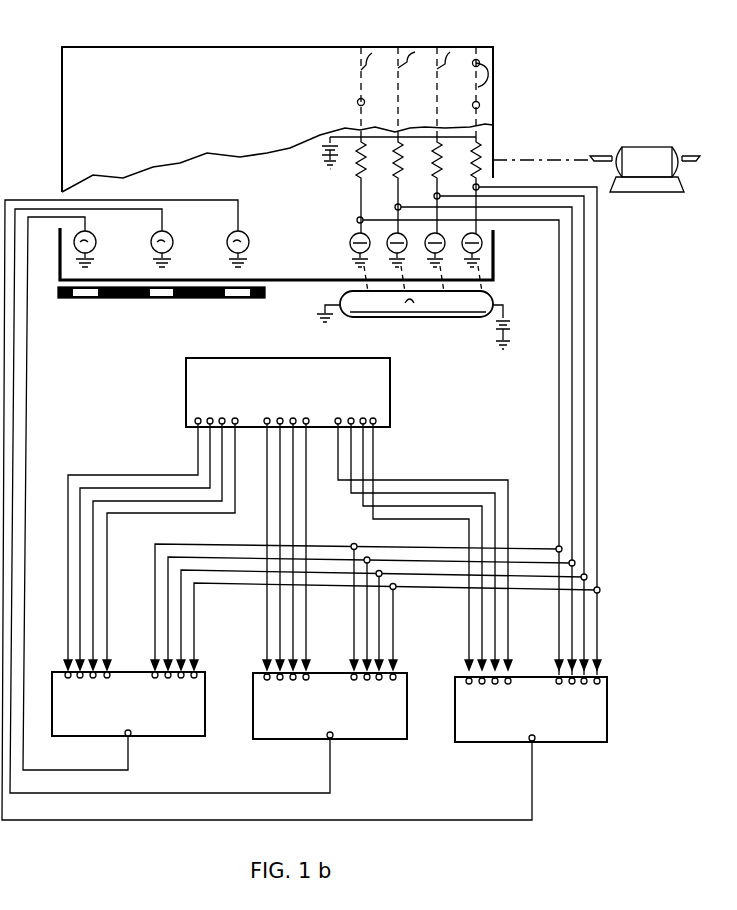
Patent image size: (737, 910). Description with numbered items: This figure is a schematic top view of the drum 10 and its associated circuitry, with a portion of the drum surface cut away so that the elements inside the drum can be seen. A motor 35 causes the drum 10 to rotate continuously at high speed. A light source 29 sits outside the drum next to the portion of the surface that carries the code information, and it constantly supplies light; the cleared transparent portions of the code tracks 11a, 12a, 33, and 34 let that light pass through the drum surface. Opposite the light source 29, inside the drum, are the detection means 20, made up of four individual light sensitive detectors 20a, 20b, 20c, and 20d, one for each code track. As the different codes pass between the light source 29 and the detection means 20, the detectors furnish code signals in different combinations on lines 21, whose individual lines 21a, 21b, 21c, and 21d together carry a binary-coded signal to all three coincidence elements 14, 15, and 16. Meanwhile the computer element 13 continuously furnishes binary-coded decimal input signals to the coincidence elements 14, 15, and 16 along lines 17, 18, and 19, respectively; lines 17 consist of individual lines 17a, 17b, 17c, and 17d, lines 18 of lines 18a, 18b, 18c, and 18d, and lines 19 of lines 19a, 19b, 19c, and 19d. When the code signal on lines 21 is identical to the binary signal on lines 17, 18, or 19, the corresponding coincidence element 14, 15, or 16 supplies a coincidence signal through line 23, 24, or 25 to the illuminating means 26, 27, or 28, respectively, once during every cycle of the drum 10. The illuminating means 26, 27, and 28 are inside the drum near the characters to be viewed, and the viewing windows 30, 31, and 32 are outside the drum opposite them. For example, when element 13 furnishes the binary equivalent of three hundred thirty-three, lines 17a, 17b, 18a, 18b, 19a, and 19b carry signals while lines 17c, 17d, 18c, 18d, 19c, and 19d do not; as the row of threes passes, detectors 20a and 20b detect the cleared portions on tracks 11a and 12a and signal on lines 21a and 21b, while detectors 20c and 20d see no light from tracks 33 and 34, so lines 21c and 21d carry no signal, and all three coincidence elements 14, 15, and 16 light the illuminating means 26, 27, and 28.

The drum 10 is at (320, 47).
The code track 11a is at (374, 50).
The code track 12a is at (418, 52).
The code track 33 is at (452, 52).
The code track 34 is at (485, 50).
The motor 35 is at (636, 147).
The detection means 20 is at (425, 183).
The light sensitive detector 20a is at (350, 239).
The light sensitive detector 20b is at (390, 232).
The light sensitive detector 20c is at (442, 236).
The light sensitive detector 20d is at (482, 248).
The illuminating means 26 is at (96, 244).
The illuminating means 27 is at (173, 244).
The illuminating means 28 is at (249, 244).
The light source 29 is at (490, 297).
The viewing window 30 is at (86, 298).
The viewing window 31 is at (162, 298).
The viewing window 32 is at (237, 298).
The element 13 is at (310, 358).
The line 23 is at (4, 390).
The line 24 is at (11, 420).
The line 25 is at (24, 454).
The lines 17 is at (136, 547).
The line 17a is at (66, 571).
The line 17b is at (78, 598).
The line 17c is at (92, 624).
The line 17d is at (106, 649).
The lines 18 is at (272, 547).
The line 18a is at (266, 605).
The line 18b is at (279, 624).
The line 18c is at (292, 641).
The line 18d is at (306, 658).
The lines 19 is at (425, 547).
The line 19a is at (468, 606).
The line 19b is at (480, 625).
The line 19c is at (493, 644).
The line 19d is at (503, 660).
The lines 21 is at (390, 546).
The line 21a is at (559, 430).
The line 21b is at (572, 462).
The line 21c is at (584, 486).
The line 21d is at (597, 516).
The coincidence element 14 is at (109, 738).
The coincidence element 15 is at (312, 742).
The coincidence element 16 is at (514, 744).